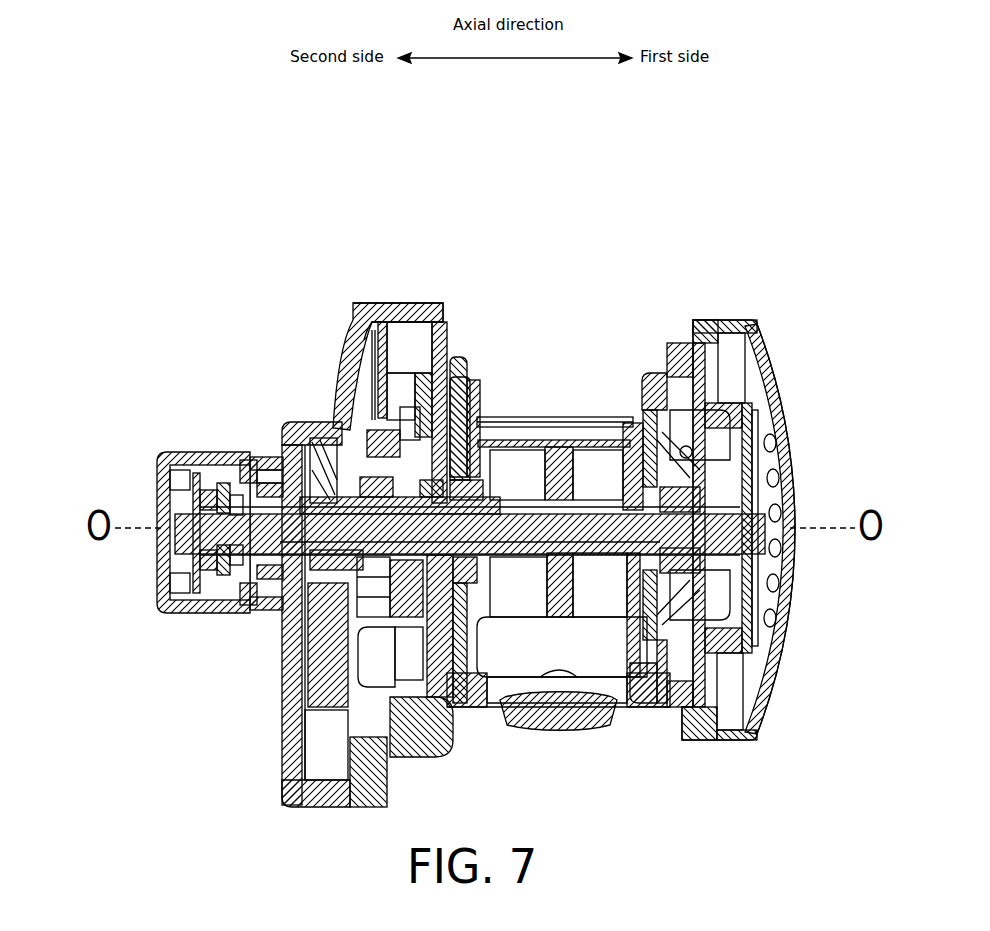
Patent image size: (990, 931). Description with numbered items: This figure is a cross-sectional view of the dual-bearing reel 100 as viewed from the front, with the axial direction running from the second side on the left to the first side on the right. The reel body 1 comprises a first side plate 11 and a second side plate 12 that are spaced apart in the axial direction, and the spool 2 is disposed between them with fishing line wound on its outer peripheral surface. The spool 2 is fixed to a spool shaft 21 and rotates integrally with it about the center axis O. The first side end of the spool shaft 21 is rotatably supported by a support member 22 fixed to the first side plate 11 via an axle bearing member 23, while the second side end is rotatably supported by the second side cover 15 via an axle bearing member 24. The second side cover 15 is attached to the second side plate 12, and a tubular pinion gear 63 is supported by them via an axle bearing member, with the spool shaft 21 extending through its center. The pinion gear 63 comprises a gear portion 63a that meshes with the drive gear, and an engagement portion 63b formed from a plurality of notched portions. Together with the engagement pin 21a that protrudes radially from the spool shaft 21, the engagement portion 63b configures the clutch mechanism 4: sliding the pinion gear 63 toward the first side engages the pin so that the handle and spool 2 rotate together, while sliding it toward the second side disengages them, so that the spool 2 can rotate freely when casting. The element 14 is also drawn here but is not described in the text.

The dual-bearing reel 100 is at (858, 237).
The reel body 1 is at (755, 304).
The spool 2 is at (586, 440).
The clutch mechanism 4 is at (590, 250).
The first side plate 11 is at (707, 320).
The second side plate 12 is at (423, 300).
The side cover 14 is at (793, 434).
The second side cover 15 is at (367, 300).
The spool shaft 21 is at (618, 425).
The engagement pin 21a is at (522, 413).
The support member 22 is at (795, 522).
The axle bearing member 23 is at (796, 496).
The axle bearing member 24 is at (190, 450).
The pinion gear 63 is at (313, 417).
The gear portion 63a is at (282, 445).
The engagement portion 63b is at (513, 465).